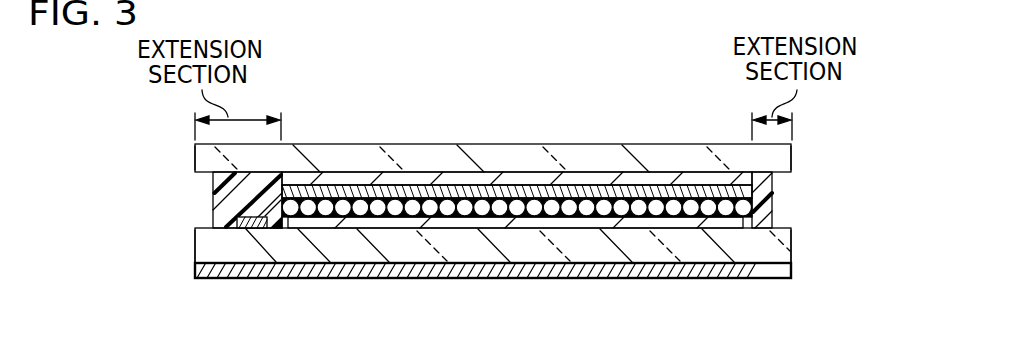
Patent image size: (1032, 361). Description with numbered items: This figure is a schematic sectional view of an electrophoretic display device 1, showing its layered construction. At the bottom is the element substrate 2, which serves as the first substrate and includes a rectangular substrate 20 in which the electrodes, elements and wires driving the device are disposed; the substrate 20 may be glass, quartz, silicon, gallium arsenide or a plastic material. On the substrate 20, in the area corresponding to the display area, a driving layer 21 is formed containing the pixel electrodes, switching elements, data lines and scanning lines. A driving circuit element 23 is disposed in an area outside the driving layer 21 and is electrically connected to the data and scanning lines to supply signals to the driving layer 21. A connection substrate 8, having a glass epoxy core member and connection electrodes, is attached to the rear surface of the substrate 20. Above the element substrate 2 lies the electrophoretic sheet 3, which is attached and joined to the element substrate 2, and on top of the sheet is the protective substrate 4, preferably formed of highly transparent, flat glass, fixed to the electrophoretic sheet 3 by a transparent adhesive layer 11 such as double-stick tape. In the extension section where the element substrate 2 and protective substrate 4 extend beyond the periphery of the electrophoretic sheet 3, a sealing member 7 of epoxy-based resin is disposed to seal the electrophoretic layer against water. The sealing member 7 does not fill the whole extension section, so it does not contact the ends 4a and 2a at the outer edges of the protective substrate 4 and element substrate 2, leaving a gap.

The electrophoretic display device 1 is at (859, 108).
The element substrate 2 is at (807, 240).
The end of element substrate 2a is at (183, 222).
The electrophoretic sheet 3 is at (653, 176).
The protective substrate 4 is at (398, 168).
The end of protective substrate 4a is at (183, 177).
The sealing member 7 is at (211, 203).
The connection substrate 8 is at (792, 270).
The transparent adhesive layer 11 is at (485, 182).
The substrate 20 is at (402, 252).
The driving layer 21 is at (477, 223).
The driving circuit element 23 is at (247, 223).